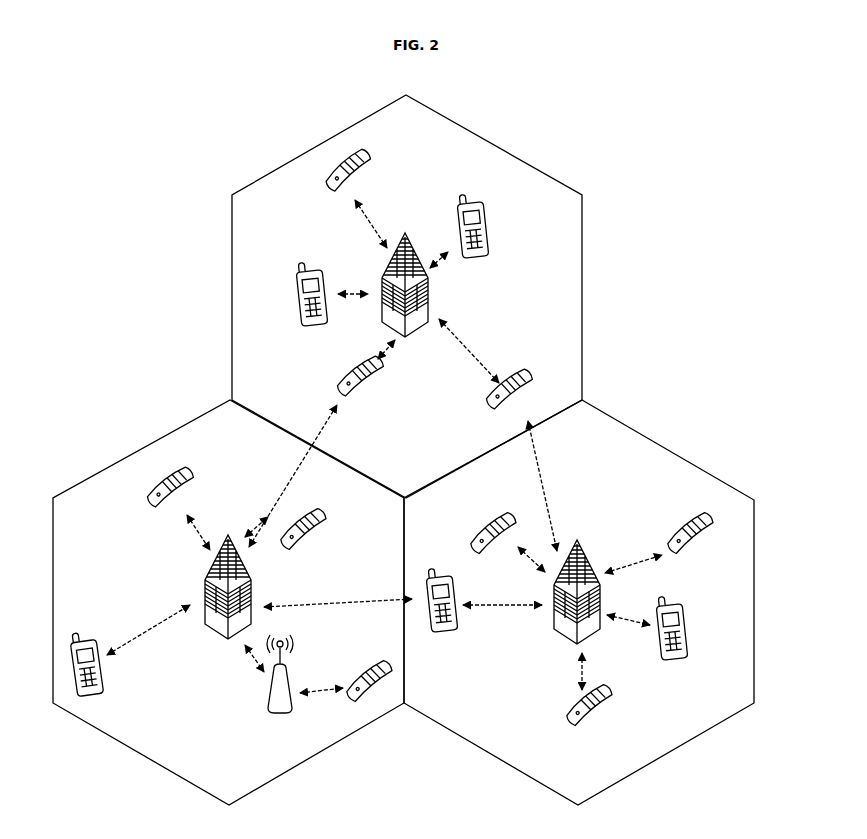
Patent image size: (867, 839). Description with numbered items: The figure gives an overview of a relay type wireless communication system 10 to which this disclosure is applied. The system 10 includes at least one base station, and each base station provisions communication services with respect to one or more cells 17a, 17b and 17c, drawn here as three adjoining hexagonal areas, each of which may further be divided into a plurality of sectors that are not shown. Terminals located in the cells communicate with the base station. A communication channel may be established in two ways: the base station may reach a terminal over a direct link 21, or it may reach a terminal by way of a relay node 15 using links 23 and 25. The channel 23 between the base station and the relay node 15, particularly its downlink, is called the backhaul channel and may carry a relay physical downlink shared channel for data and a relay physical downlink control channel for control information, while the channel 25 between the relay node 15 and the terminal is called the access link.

The wireless communication system 10 is at (674, 150).
The relay node 15 is at (268, 706).
The cell 17a is at (582, 292).
The cell 17b is at (665, 753).
The cell 17c is at (317, 752).
The direct link 21 is at (140, 633).
The backhaul link 23 is at (246, 652).
The access link 25 is at (323, 693).